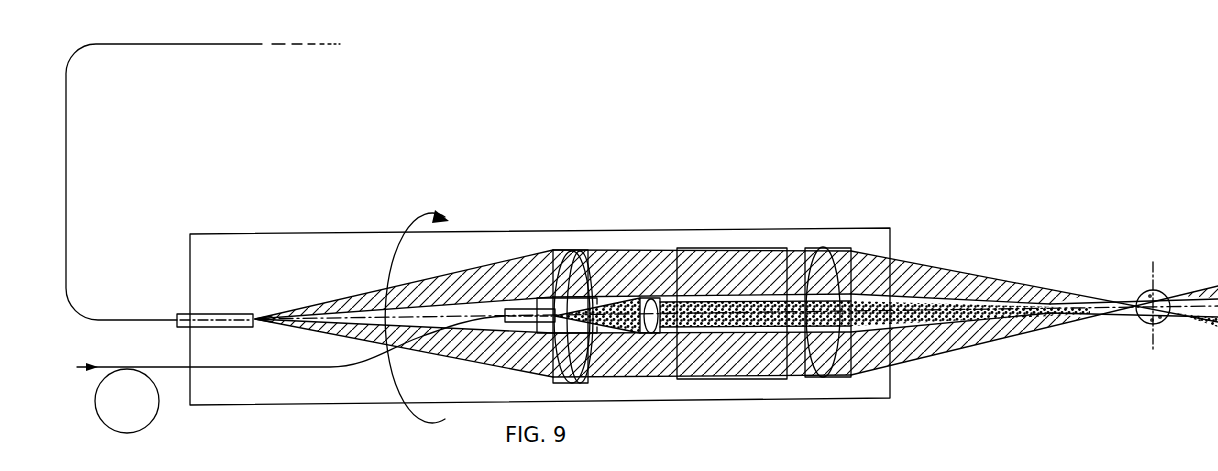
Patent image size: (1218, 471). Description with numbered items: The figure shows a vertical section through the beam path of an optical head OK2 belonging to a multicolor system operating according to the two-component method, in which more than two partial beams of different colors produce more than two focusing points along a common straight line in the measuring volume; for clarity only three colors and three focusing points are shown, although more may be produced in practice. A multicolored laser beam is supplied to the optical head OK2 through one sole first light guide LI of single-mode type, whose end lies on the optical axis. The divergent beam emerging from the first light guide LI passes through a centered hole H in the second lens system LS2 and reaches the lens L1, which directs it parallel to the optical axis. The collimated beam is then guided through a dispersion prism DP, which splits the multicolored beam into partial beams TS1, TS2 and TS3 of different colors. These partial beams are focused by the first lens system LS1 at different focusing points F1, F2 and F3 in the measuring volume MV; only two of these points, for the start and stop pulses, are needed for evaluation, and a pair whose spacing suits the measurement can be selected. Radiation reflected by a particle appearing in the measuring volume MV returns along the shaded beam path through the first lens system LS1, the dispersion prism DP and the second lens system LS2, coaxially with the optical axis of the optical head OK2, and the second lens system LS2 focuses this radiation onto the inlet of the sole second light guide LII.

The second light guide LII is at (66, 157).
The first light guide LI is at (313, 367).
The optical head OK2 is at (682, 237).
The second lens system LS2 is at (576, 275).
The centered hole H is at (588, 285).
The dispersion prism DP is at (755, 263).
The first lens system LS1 is at (825, 265).
The lens L1 is at (653, 334).
The partial beam TS1 is at (1042, 298).
The partial beam TS2 is at (1045, 320).
The partial beam TS3 is at (1085, 325).
The measuring volume MV is at (1160, 292).
The focusing point F1 is at (1150, 295).
The focusing point F2 is at (1160, 318).
The focusing point F3 is at (1152, 320).